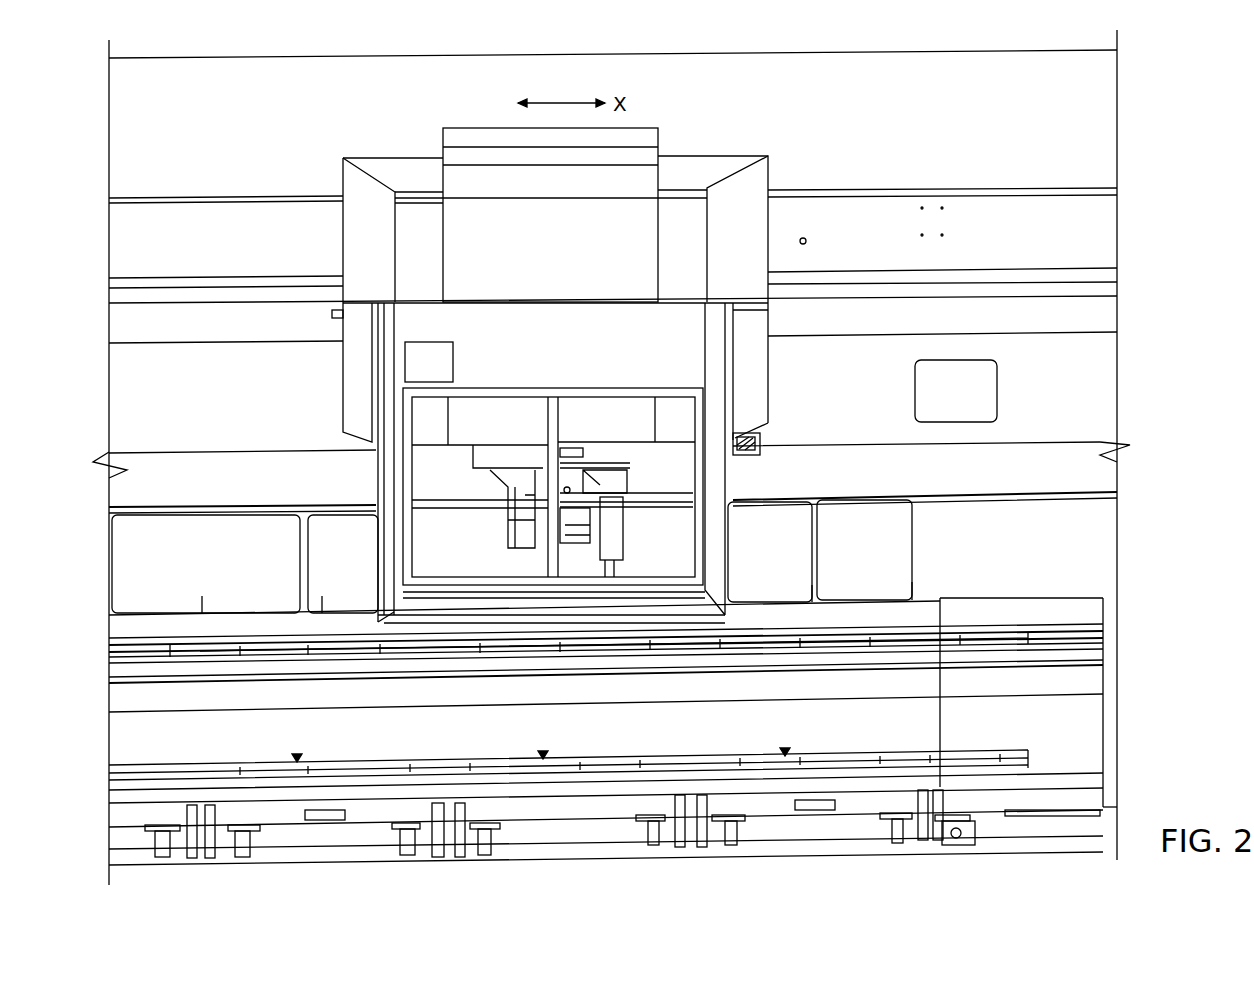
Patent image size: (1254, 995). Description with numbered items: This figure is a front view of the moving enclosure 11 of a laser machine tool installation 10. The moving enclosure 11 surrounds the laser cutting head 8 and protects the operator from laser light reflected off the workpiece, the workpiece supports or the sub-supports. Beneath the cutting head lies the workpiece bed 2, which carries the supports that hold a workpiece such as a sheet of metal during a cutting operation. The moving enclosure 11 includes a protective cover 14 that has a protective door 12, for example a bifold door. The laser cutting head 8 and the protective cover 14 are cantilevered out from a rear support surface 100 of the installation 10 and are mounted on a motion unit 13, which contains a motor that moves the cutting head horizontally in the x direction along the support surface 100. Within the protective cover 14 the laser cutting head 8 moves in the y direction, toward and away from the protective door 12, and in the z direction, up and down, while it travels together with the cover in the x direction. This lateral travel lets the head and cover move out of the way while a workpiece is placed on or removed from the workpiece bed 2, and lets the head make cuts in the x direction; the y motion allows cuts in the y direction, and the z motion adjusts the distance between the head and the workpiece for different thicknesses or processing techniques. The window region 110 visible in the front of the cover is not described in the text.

The laser machine tool installation 10 is at (1122, 160).
The rear support surface 100 is at (978, 210).
The moving enclosure 11 is at (666, 374).
The protective door 12 is at (664, 484).
The motion unit 13 is at (362, 373).
The protective cover 14 is at (386, 553).
The window 110 is at (484, 560).
The laser cutting head 8 is at (580, 520).
The workpiece bed 2 is at (1090, 637).